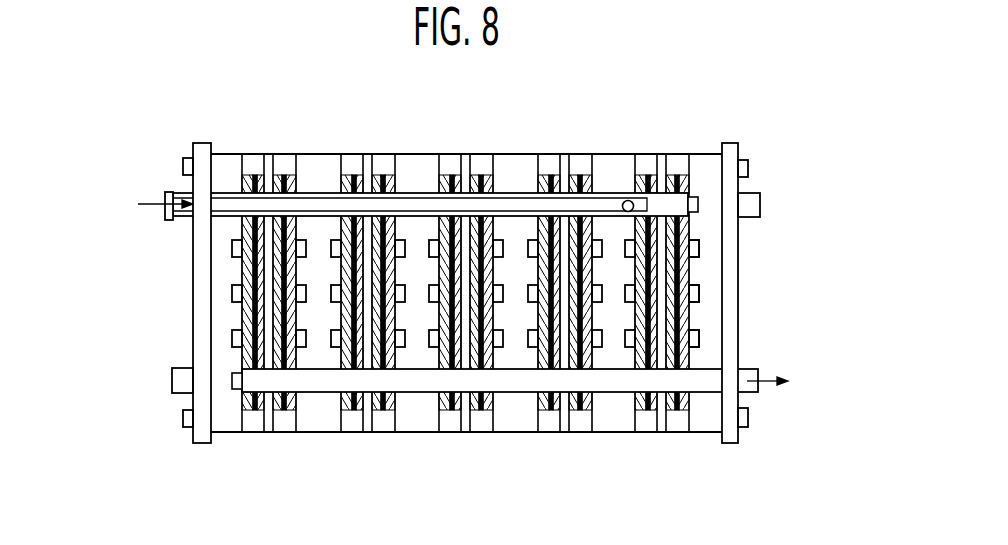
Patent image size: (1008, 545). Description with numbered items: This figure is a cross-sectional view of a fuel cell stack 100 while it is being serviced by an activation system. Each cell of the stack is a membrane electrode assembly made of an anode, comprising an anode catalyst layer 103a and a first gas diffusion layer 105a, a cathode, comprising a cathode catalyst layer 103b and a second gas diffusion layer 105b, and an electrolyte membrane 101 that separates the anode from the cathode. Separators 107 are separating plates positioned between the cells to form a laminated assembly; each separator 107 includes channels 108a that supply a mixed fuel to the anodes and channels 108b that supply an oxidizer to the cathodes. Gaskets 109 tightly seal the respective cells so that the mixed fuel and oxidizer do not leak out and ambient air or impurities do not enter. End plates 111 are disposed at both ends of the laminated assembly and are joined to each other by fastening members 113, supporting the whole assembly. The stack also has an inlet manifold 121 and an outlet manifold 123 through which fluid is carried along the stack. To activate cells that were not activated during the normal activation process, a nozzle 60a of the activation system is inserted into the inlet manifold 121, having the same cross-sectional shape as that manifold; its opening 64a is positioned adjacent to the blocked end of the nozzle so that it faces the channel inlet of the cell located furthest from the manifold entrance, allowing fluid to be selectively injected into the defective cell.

The fuel cell stack 100 is at (229, 116).
The nozzle 60a is at (160, 180).
The inlet manifold 121 is at (232, 208).
The outlet manifold 123 is at (705, 372).
The opening 64a is at (628, 200).
The channels 108a is at (232, 288).
The channels 108b is at (699, 290).
The first gas diffusion layer 105a is at (247, 408).
The anode catalyst layer 103a is at (255, 410).
The electrolyte membrane 101 is at (269, 423).
The cathode catalyst layer 103b is at (285, 412).
The second gas diffusion layer 105b is at (295, 407).
The separator 107 is at (617, 422).
The gasket 109 is at (645, 427).
The end plate 111 is at (733, 432).
The fastening member 113 is at (748, 420).